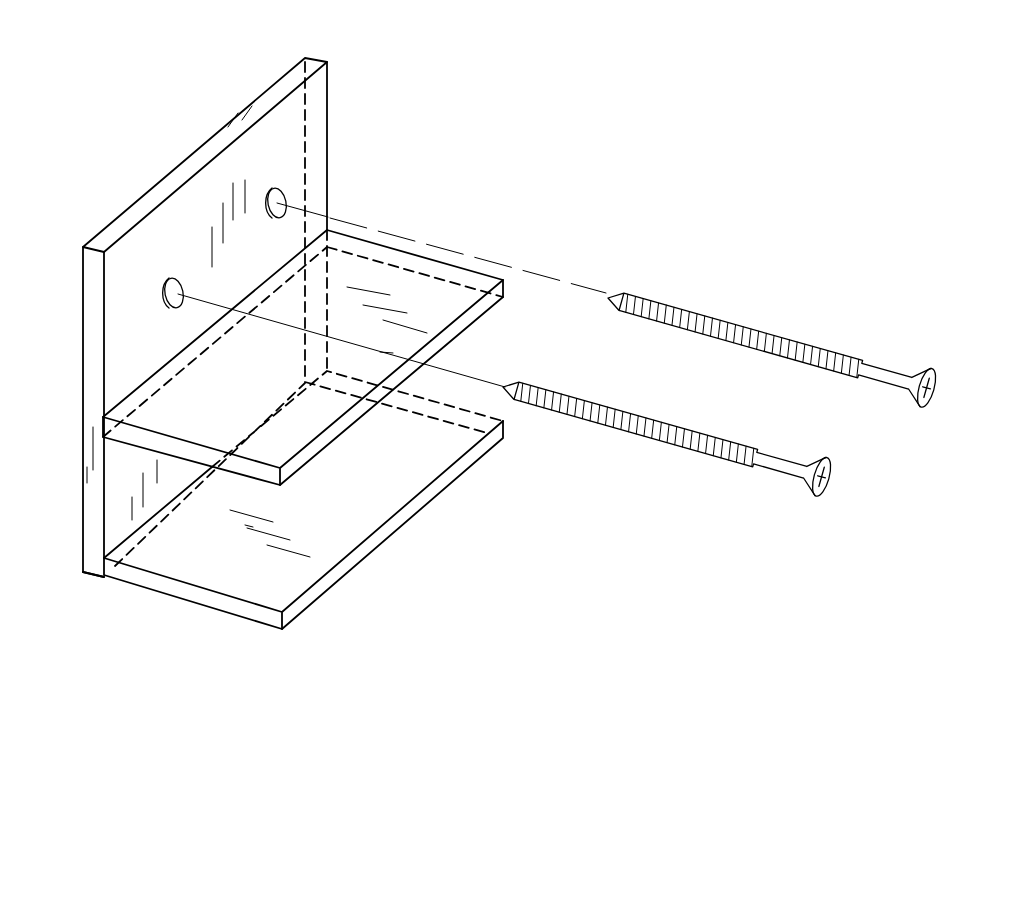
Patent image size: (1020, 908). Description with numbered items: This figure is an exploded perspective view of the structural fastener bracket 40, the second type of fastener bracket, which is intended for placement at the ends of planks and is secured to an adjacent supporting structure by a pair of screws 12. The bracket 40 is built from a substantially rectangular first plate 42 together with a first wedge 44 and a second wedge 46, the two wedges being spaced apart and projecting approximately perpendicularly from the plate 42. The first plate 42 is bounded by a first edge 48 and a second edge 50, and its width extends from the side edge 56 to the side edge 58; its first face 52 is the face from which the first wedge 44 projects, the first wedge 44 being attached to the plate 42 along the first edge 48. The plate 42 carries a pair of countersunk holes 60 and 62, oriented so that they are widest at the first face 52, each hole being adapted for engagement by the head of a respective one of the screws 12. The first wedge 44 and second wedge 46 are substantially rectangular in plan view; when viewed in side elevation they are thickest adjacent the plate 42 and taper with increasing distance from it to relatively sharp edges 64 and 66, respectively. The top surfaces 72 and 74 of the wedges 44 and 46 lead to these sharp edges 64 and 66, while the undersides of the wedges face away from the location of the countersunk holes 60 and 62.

The screws 12 is at (733, 440).
The structural fastener bracket 40 is at (428, 97).
The first plate 42 is at (270, 157).
The first wedge 44 is at (345, 527).
The second wedge 46 is at (410, 298).
The first edge 48 is at (119, 538).
The second edge 50 is at (273, 95).
The first face 52 is at (122, 336).
The side edge 56 is at (97, 382).
The side edge 58 is at (328, 124).
The countersunk hole 60 is at (180, 280).
The countersunk hole 62 is at (283, 198).
The sharp edge 64 is at (468, 460).
The sharp edge 66 is at (473, 313).
The top surface 72 is at (207, 562).
The top surface 74 is at (256, 371).